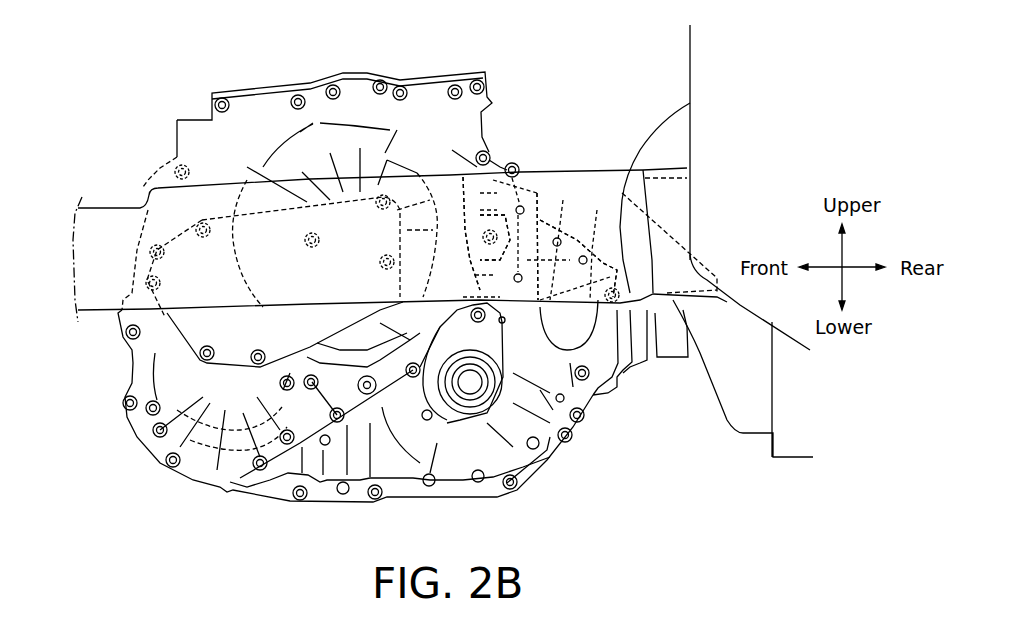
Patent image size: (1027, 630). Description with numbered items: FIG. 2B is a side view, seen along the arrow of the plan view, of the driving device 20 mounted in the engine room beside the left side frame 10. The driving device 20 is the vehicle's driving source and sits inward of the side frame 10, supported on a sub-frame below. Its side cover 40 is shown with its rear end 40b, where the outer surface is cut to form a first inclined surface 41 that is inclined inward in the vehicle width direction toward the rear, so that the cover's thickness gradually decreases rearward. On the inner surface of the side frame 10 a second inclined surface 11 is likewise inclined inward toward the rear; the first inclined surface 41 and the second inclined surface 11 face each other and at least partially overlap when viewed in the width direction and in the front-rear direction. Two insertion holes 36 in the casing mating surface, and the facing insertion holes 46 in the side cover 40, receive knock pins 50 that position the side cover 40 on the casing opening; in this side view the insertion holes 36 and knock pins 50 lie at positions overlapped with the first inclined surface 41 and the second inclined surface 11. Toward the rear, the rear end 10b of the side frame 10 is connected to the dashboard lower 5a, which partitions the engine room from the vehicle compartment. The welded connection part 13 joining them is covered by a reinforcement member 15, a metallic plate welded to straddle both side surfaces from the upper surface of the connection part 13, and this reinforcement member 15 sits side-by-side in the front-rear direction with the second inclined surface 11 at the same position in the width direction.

The side frame 10 is at (107, 217).
The driving device 20 is at (508, 80).
The second inclined surface 11 is at (507, 166).
The insertion hole 36 is at (527, 220).
The insertion hole 46 is at (553, 170).
The knock pin 50 is at (553, 170).
The rear end 40b is at (563, 200).
The first inclined surface 41 is at (597, 210).
The dashboard lower 5a is at (744, 120).
The rear end 10b is at (683, 208).
The side cover 40 is at (131, 375).
The reinforcement member 15 is at (655, 292).
The connection part 13 is at (698, 304).